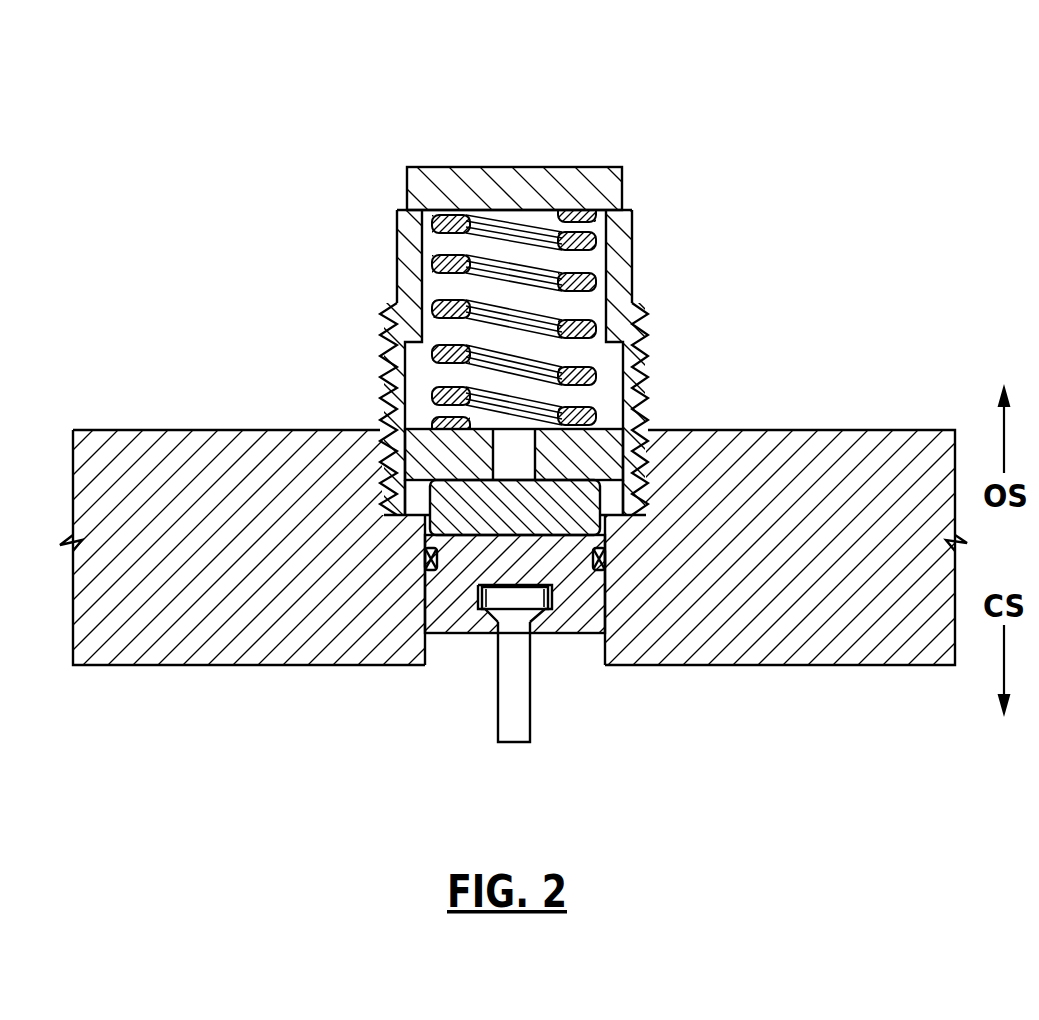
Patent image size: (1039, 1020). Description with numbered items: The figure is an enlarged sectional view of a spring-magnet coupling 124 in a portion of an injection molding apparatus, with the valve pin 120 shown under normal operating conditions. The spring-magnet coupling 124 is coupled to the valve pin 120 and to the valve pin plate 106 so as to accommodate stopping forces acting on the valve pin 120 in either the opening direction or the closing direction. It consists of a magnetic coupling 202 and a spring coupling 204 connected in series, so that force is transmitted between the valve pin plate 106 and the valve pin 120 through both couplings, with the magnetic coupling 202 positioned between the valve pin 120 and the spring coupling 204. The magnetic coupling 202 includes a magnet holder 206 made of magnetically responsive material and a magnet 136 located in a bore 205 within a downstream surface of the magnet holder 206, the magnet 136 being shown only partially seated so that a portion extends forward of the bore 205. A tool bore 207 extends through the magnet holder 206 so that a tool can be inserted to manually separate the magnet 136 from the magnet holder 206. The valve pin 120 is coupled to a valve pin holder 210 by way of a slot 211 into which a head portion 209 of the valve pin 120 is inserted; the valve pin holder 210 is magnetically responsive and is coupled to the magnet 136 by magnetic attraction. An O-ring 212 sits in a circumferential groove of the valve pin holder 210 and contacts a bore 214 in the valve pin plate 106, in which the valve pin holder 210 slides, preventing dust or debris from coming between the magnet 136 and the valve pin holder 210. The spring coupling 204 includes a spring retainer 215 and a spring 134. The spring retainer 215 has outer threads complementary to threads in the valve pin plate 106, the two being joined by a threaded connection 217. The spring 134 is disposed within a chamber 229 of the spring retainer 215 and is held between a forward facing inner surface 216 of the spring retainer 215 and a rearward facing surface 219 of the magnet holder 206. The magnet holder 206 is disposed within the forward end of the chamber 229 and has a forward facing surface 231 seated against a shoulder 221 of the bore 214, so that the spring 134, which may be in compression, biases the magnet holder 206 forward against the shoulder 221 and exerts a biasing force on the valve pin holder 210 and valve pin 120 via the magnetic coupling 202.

The spring-magnet coupling 124 is at (840, 152).
The valve pin plate 106 is at (888, 430).
The forward facing inner surface 216 is at (527, 215).
The spring 134 is at (603, 242).
The spring retainer 215 is at (622, 267).
The spring coupling 204 is at (375, 338).
The rearward facing surface 219 is at (648, 405).
The chamber 229 is at (423, 367).
The magnet holder 206 is at (605, 455).
The tool bore 207 is at (413, 468).
The threaded connection 217 is at (500, 460).
The shoulder 221 is at (623, 507).
The forward facing surface 231 is at (405, 515).
The magnet 136 is at (603, 533).
The head portion 209 is at (472, 633).
The bore 205 is at (425, 552).
The O-ring 212 is at (596, 568).
The slot 211 is at (591, 626).
The valve pin 120 is at (530, 725).
The valve pin holder 210 is at (522, 723).
The magnetic coupling 202 is at (400, 555).
The bore 214 is at (425, 662).